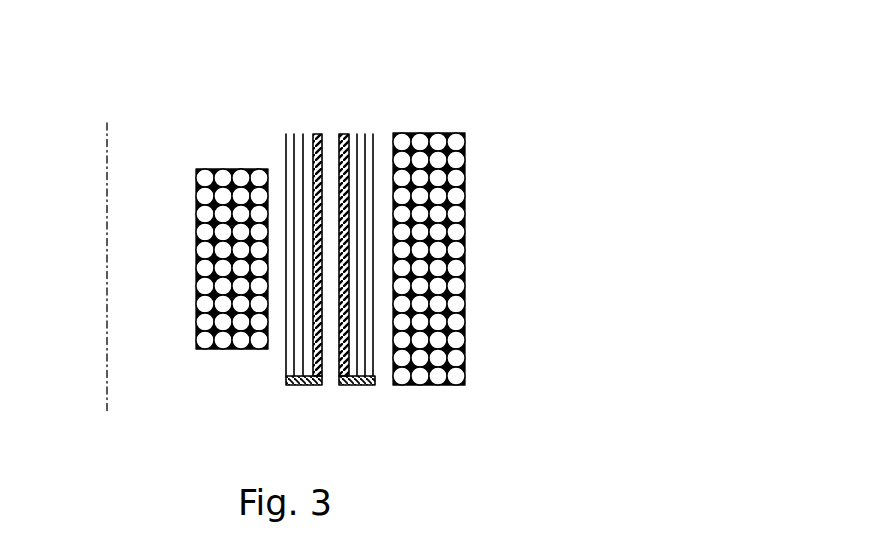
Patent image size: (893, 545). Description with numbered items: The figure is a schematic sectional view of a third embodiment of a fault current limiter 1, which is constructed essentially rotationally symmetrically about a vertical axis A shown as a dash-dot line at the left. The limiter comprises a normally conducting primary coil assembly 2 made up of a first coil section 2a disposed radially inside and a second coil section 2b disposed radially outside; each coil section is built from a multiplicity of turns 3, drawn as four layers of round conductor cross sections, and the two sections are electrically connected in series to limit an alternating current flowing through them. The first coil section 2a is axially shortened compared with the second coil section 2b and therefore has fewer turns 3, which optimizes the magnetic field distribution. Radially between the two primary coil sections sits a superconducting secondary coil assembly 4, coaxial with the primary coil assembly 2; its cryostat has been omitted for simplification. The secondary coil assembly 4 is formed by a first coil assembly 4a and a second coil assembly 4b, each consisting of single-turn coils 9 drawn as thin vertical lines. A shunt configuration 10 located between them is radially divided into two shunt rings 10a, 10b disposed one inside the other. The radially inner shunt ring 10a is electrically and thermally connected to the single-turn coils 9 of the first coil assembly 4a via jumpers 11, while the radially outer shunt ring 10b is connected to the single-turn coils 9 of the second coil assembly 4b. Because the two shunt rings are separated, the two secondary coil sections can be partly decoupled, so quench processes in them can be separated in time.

The fault current limiter 1 is at (510, 95).
The primary coil assembly 2 is at (303, 230).
The first coil section 2a is at (219, 225).
The second coil section 2b is at (430, 122).
The turns 3 is at (241, 176).
The secondary coil assembly 4 is at (306, 254).
The first coil assembly 4a is at (286, 210).
The second coil assembly 4b is at (364, 209).
The single-turn coils 9 is at (283, 140).
The shunt configuration 10 is at (337, 408).
The radially inner shunt ring 10a is at (317, 134).
The radially outer shunt ring 10b is at (344, 134).
The jumpers 11 is at (296, 386).
The vertical axis A is at (107, 196).